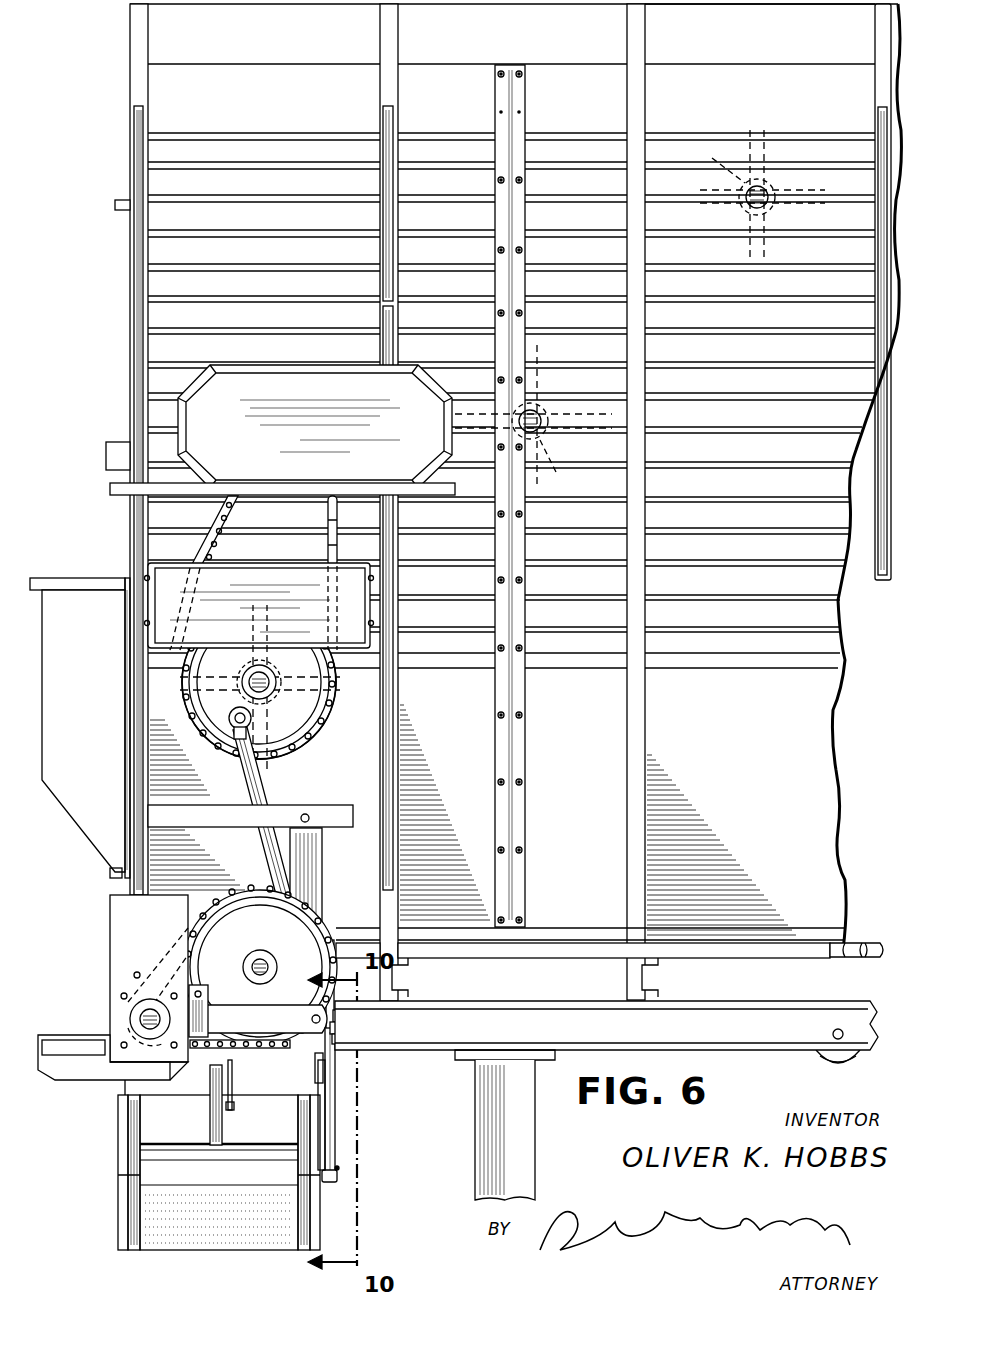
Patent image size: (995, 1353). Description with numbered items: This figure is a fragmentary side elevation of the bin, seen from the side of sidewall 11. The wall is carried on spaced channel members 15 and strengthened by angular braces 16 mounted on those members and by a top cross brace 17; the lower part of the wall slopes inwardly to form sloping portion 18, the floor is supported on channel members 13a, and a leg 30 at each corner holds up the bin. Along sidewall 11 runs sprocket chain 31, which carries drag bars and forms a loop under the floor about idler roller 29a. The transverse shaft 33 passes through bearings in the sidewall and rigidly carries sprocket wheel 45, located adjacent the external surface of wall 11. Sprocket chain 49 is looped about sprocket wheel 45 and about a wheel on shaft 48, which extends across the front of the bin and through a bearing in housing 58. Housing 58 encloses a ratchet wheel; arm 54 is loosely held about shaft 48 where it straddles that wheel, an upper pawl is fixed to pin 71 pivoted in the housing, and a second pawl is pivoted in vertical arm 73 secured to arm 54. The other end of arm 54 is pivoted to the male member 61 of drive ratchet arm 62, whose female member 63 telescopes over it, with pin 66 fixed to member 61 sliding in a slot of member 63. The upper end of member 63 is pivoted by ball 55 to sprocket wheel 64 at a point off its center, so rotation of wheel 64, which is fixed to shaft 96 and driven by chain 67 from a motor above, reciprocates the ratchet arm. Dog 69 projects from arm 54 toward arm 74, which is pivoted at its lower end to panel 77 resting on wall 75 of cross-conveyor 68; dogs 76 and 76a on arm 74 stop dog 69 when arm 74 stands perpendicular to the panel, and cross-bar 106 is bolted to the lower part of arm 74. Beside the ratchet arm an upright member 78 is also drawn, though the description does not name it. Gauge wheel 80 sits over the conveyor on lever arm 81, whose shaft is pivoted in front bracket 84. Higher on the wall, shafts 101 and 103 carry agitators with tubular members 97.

The sidewall 11 is at (836, 600).
The channel members 13a is at (648, 976).
The channel members 15 is at (385, 40).
The angular braces 16 is at (393, 125).
The top cross brace 17 is at (880, 5).
The sloping portions 18 is at (820, 776).
The idler roller 29a is at (836, 1064).
The leg 30 is at (476, 1118).
The sprocket chain 31 is at (852, 942).
The shaft 33 is at (251, 963).
The sprocket wheel 45 is at (262, 920).
The shaft 48 is at (145, 1017).
The sprocket chain 49 is at (188, 908).
The arm 54 is at (250, 1004).
The ball 55 is at (232, 716).
The housing 58 is at (115, 965).
The male member 61 is at (302, 1001).
The drive ratchet arm 62 is at (257, 801).
The female member 63 is at (270, 793).
The sprocket wheel 64 is at (305, 700).
The pin 66 is at (302, 928).
The chain 67 is at (185, 692).
The cross-conveyor 68 is at (108, 1186).
The dog 69 is at (346, 1017).
The pin 71 is at (139, 971).
The vertical arm 73 is at (200, 1013).
The arm 74 is at (336, 1135).
The wall 75 is at (330, 1118).
The dog 76 is at (346, 1027).
The dog 76a is at (338, 1042).
The panel 77 is at (312, 1075).
The post 78 is at (325, 851).
The gauge wheel 80 is at (208, 1111).
The lever arm 81 is at (232, 1082).
The front bracket 84 is at (122, 1085).
The shaft 96 is at (254, 678).
The tubular members 97 is at (642, 317).
The shaft 101 is at (533, 410).
The shaft 103 is at (760, 193).
The cross-bar 106 is at (335, 1168).